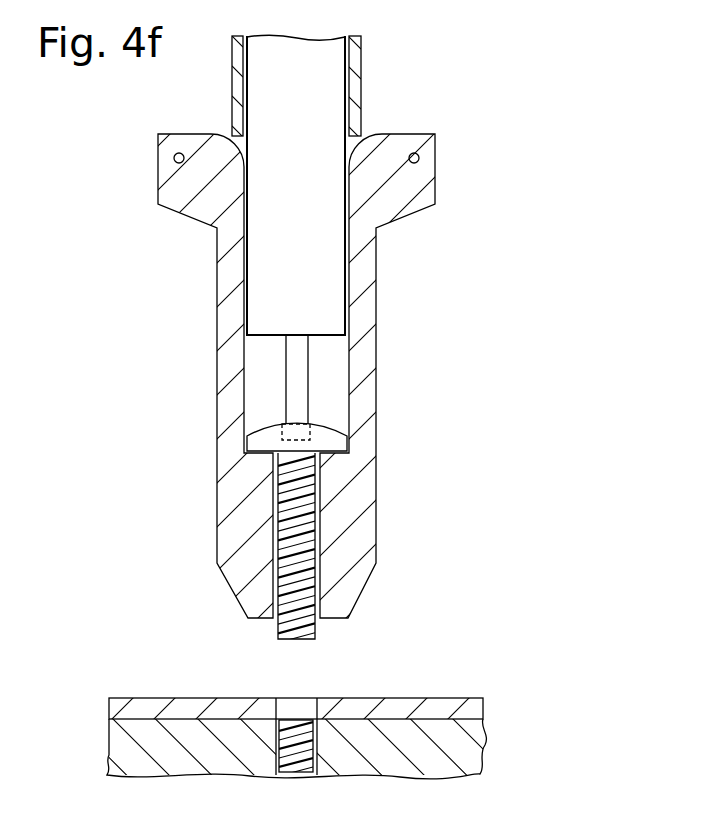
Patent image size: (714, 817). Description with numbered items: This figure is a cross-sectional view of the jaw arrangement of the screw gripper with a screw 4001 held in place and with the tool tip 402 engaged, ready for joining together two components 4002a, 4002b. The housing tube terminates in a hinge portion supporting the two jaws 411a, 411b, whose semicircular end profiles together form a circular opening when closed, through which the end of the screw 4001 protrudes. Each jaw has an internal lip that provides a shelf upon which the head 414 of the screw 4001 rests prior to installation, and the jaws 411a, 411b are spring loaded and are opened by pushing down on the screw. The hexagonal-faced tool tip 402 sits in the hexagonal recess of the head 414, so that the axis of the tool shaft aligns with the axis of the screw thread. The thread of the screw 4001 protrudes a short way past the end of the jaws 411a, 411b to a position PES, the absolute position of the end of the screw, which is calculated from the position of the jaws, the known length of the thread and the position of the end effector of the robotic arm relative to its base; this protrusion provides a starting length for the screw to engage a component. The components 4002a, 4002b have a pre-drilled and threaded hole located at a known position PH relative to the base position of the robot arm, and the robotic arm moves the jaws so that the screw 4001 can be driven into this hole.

The tool tip 402 is at (297, 402).
The head 414 is at (335, 440).
The jaw 411a is at (248, 505).
The jaw 411b is at (350, 497).
The screw 4001 is at (307, 553).
The component 4002b is at (467, 705).
The component 4002a is at (467, 748).
The position of the end of the screw PES is at (276, 639).
The position of the hole PH is at (303, 698).